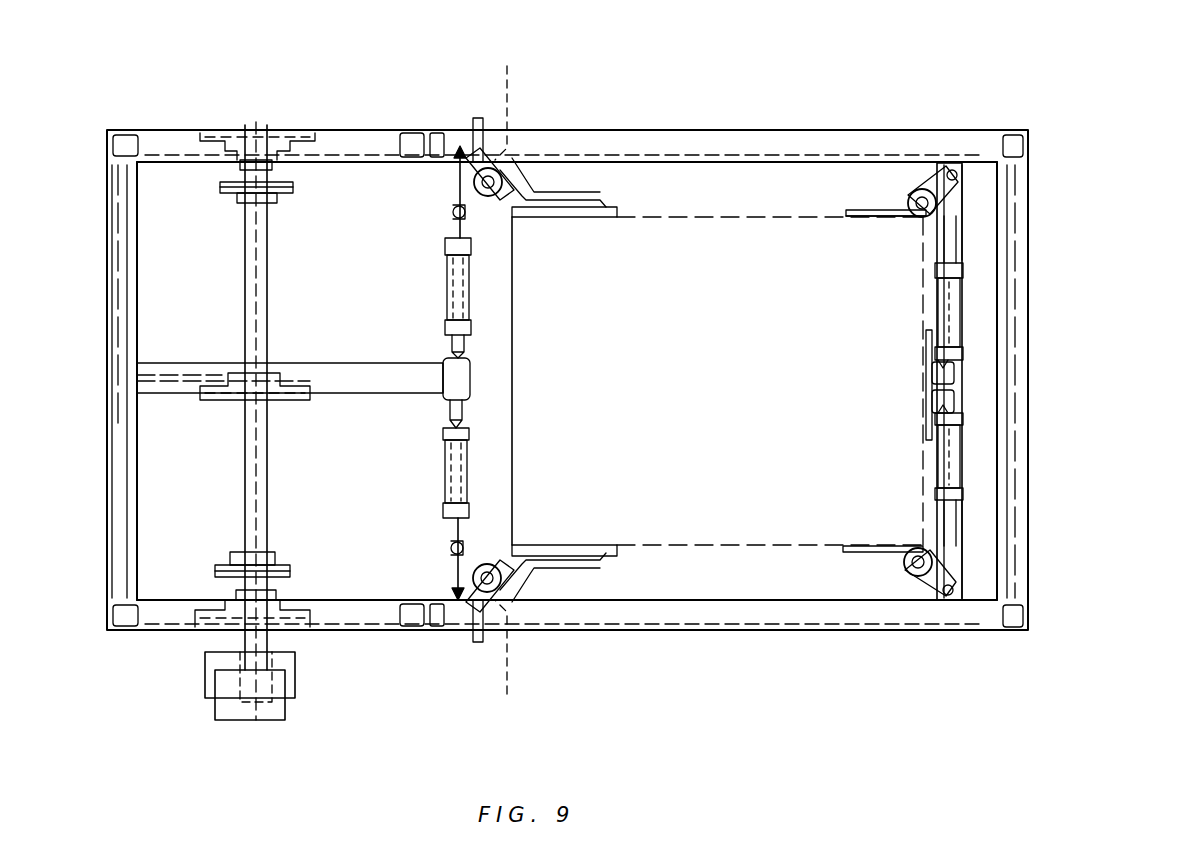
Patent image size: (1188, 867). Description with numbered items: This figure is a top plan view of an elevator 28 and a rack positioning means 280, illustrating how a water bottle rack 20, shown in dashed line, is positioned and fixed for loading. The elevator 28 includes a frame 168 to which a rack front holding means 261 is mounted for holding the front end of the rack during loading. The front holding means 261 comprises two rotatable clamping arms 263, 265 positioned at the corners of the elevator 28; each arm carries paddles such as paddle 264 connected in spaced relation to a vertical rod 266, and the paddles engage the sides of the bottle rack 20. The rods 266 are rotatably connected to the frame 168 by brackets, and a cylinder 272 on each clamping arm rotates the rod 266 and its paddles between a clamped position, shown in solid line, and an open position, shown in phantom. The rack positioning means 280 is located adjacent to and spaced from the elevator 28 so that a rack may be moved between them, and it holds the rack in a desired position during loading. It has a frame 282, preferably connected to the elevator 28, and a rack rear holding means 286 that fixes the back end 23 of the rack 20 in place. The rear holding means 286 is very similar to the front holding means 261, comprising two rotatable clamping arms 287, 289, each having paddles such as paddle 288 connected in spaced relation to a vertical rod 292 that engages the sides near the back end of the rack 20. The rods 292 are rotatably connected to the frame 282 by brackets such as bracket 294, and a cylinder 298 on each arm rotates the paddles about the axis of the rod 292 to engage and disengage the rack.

The elevator 28 is at (230, 100).
The rack positioning means 280 is at (985, 376).
The bottle rack 20 is at (683, 212).
The back end 23 is at (876, 225).
The frame 168 is at (342, 622).
The rack front holding means 261 is at (394, 373).
The clamping arm 263 is at (445, 177).
The clamping arm 265 is at (432, 580).
The paddle 264 is at (585, 205).
The vertical rod 266 is at (520, 165).
The cylinder 272 is at (452, 290).
The frame 282 is at (1018, 292).
The rack rear holding means 286 is at (992, 381).
The clamping arm 287 is at (975, 205).
The paddle 288 is at (856, 209).
The clamping arm 289 is at (975, 553).
The vertical rod 292 is at (930, 194).
The bracket 294 is at (950, 172).
The cylinder 298 is at (946, 316).